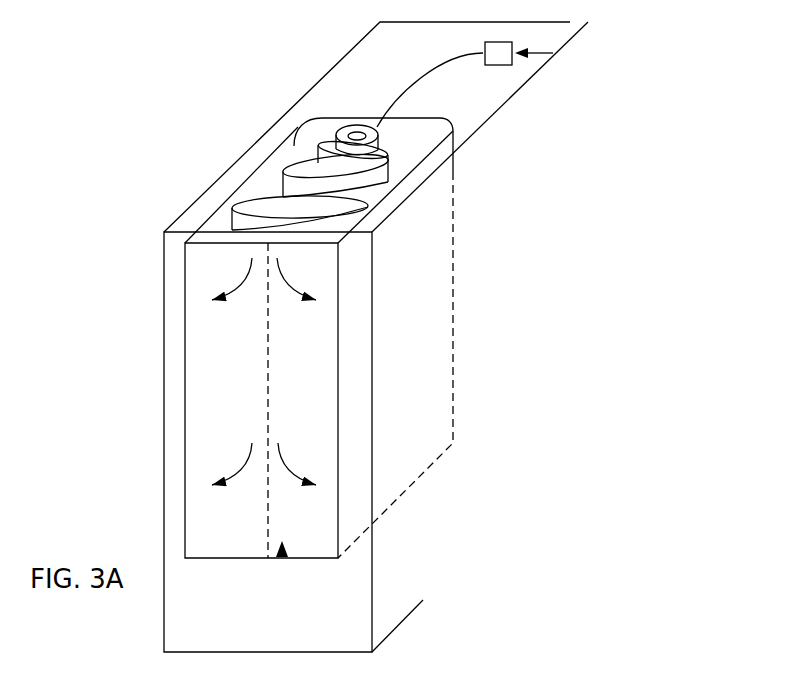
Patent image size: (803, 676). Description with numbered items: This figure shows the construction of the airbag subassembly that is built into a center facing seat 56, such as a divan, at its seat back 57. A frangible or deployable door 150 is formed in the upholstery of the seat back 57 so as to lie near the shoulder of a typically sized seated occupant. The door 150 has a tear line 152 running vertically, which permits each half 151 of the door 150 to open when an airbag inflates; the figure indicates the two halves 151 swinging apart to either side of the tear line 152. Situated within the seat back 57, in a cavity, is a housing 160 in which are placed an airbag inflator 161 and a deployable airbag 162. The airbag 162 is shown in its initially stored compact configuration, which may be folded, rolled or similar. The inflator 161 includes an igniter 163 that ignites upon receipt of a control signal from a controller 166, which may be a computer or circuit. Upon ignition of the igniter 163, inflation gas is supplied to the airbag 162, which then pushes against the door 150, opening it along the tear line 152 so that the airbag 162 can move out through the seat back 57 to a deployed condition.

The center facing seat 56 is at (355, 55).
The seat back 57 is at (178, 215).
The door 150 is at (280, 557).
The half of the door 151 is at (210, 528).
The tear line 152 is at (268, 538).
The housing 160 is at (443, 152).
The airbag inflator 161 is at (347, 131).
The deployable airbag 162 is at (293, 166).
The igniter 163 is at (357, 136).
The controller 166 is at (545, 53).